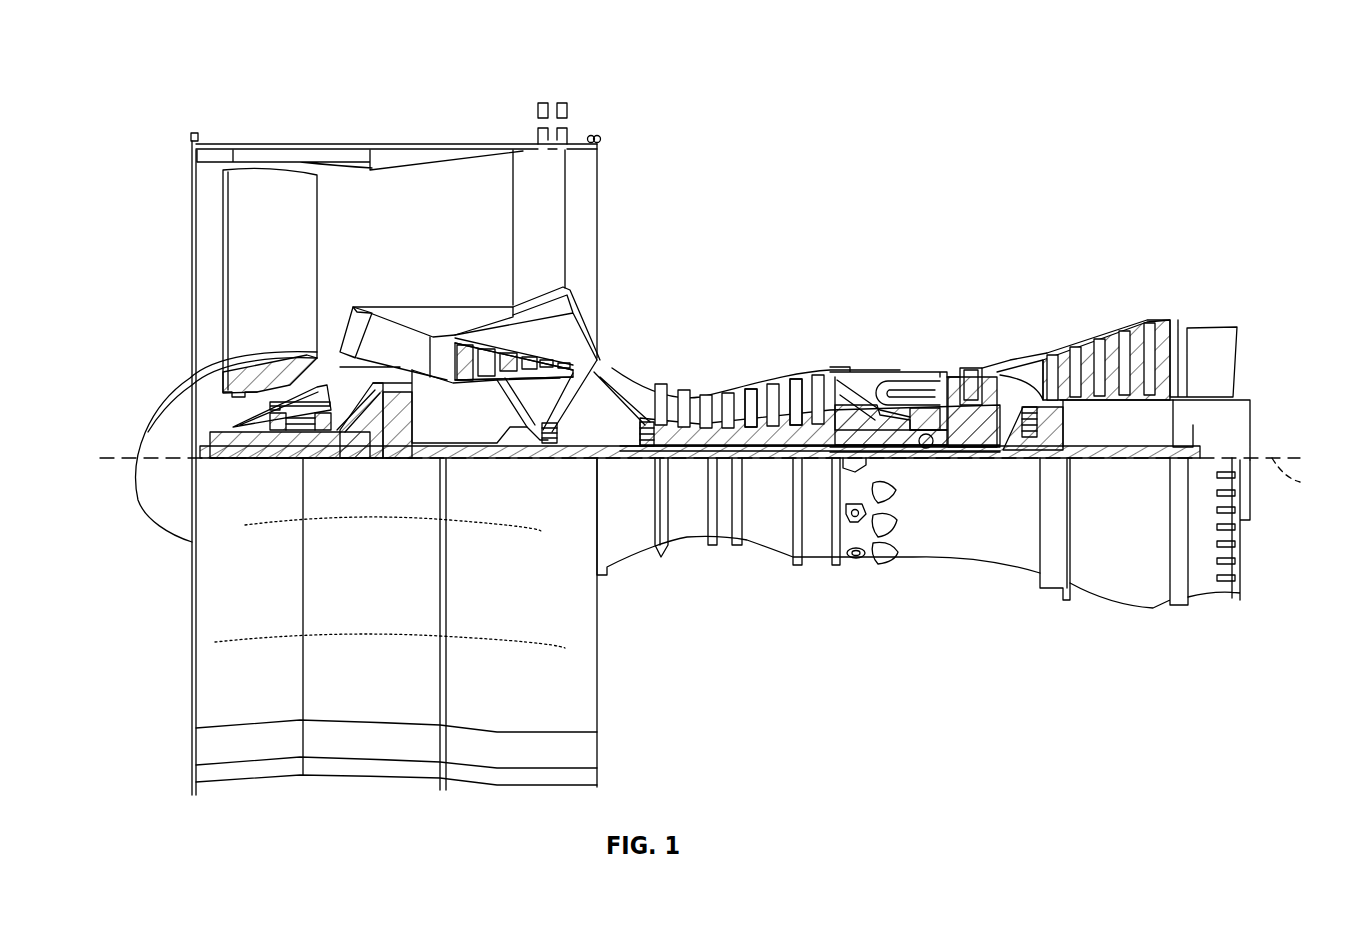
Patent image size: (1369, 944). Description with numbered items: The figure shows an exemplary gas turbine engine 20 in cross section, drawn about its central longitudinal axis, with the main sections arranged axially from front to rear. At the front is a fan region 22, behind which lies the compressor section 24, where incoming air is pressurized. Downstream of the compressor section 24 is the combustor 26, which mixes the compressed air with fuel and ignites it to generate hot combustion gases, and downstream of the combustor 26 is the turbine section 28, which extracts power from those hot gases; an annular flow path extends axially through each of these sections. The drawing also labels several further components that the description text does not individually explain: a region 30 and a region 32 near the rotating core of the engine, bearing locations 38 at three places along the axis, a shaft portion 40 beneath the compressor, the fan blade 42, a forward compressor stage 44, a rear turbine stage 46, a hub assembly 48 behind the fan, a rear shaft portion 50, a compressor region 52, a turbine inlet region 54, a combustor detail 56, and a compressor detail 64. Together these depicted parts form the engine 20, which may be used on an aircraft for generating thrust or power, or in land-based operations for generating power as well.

The gas turbine engine 20 is at (789, 156).
The fan section 22 is at (241, 90).
The compressor section 24 is at (624, 360).
The combustor 26 is at (936, 360).
The turbine section 28 is at (1048, 326).
The low speed spool 30 is at (757, 462).
The high speed spool 32 is at (800, 417).
The bearing systems 38 is at (312, 425).
The inner shaft 40 is at (622, 462).
The fan 42 is at (280, 279).
The low pressure compressor 44 is at (603, 378).
The low pressure turbine 46 is at (1098, 405).
The geared architecture 48 is at (385, 460).
The outer shaft 50 is at (930, 450).
The high pressure compressor 52 is at (718, 426).
The high pressure turbine 54 is at (972, 370).
The combustor 56 is at (896, 392).
The compressor rotor blade 64 is at (748, 418).